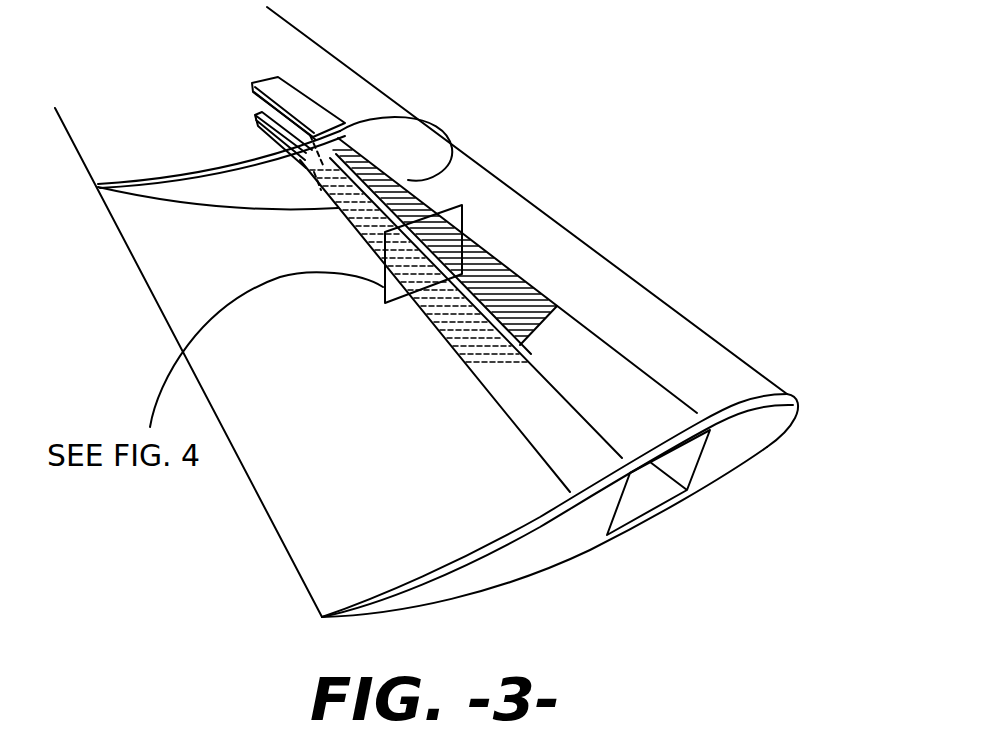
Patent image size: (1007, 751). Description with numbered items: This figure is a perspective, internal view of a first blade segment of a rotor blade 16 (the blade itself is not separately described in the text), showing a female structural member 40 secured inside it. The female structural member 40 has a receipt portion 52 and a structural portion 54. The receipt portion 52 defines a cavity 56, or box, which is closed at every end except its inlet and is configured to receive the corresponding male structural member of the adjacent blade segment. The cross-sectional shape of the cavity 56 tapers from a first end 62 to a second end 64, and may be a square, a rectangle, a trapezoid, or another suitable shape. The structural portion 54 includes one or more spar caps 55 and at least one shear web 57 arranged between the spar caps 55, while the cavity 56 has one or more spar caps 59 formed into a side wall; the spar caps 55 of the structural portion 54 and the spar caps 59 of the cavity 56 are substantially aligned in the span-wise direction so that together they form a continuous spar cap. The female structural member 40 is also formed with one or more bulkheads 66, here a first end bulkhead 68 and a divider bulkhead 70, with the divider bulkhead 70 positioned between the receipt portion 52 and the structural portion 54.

The aircraft wing assembly 16 is at (640, 156).
The female structural member 40 is at (648, 356).
The receipt portion 52 is at (520, 409).
The structural portion 54 is at (305, 93).
The spar caps 55 is at (268, 80).
The cavity 56 is at (657, 496).
The shear web 57 is at (260, 145).
The spar caps 59 is at (496, 306).
The first end 62 is at (571, 464).
The second end 64 is at (330, 180).
The bulkheads 66 is at (430, 161).
The first end bulkhead 68 is at (483, 572).
The divider bulkhead 70 is at (190, 197).